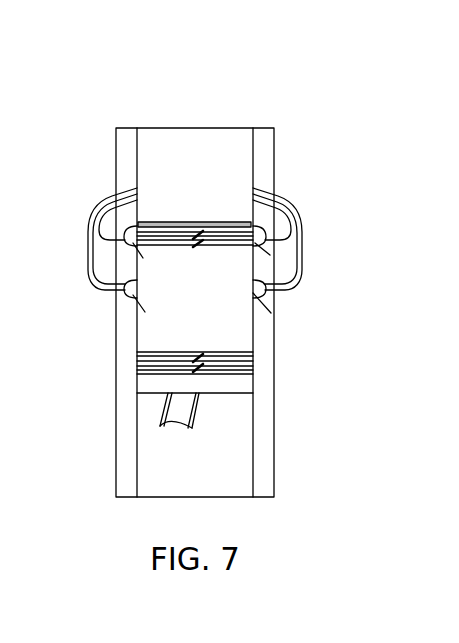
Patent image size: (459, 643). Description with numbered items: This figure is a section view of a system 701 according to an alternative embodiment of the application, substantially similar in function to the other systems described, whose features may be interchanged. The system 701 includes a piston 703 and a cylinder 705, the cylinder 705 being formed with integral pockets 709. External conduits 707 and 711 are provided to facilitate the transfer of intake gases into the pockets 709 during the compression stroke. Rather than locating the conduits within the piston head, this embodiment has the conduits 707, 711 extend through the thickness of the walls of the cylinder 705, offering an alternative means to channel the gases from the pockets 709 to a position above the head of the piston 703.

The system 701 is at (293, 107).
The piston 703 is at (228, 393).
The cylinder 705 is at (125, 128).
The external conduit 707 is at (88, 243).
The integral pockets 709 is at (260, 292).
The external conduit 711 is at (278, 203).